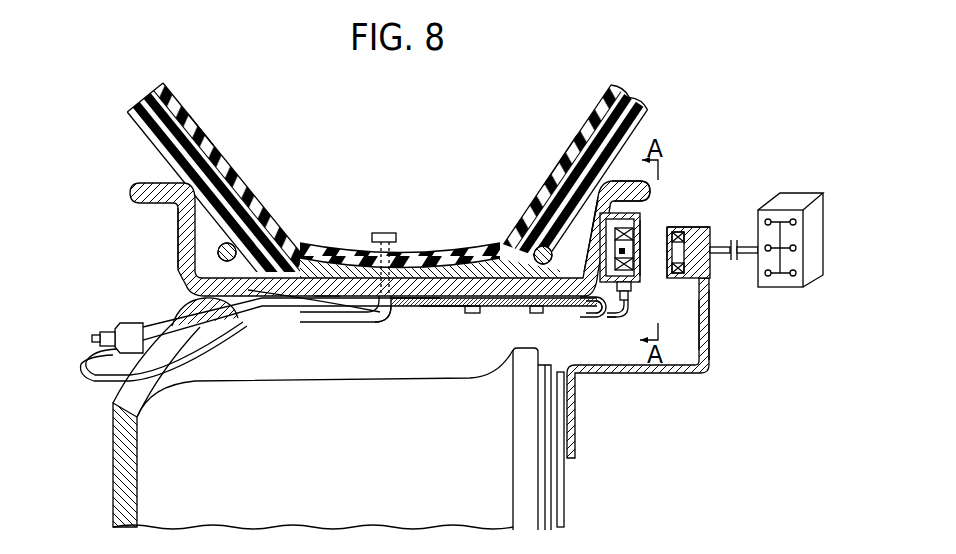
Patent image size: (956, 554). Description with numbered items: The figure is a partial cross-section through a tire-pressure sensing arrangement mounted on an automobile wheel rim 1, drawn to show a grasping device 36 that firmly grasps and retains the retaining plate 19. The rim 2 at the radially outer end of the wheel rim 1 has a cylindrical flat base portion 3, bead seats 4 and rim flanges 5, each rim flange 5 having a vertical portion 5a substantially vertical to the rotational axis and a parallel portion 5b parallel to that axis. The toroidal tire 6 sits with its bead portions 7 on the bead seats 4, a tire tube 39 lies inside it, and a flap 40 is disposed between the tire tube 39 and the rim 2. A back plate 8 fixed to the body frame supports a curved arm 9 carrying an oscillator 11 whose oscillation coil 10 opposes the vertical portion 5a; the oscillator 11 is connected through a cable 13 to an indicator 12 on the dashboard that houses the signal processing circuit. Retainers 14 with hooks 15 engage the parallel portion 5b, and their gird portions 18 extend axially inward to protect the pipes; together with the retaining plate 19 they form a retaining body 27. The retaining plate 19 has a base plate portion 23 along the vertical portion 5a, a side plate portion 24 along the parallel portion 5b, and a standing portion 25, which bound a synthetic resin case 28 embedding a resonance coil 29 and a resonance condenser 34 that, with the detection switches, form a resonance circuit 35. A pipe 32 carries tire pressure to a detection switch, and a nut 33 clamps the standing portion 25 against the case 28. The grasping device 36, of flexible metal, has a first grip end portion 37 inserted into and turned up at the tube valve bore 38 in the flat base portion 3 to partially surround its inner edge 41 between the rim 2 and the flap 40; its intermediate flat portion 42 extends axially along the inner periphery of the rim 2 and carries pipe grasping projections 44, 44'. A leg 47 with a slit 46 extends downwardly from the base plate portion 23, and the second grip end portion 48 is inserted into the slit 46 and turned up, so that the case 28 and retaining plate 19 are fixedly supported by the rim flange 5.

The wheel rim 1 is at (106, 434).
The rim 2 is at (258, 297).
The cylindrical flat base portion 3 is at (293, 298).
The bead seat 4 is at (502, 293).
The rim flange 5 is at (176, 214).
The vertical portion 5a is at (553, 218).
The parallel portion 5b is at (610, 193).
The tire 6 is at (143, 110).
The bead portion 7 is at (232, 202).
The back plate 8 is at (563, 490).
The curved arm 9 is at (652, 372).
The oscillation coil 10 is at (680, 228).
The oscillator 11 is at (715, 223).
The indicator 12 is at (797, 203).
The cable 13 is at (739, 260).
The retainer 14 is at (662, 175).
The hook 15 is at (651, 193).
The gird portion 18 is at (608, 310).
The retaining plate 19 is at (593, 200).
The base plate portion 23 is at (577, 242).
The side plate portion 24 is at (628, 232).
The standing portion 25 is at (628, 294).
The retaining body 27 is at (688, 184).
The case 28 is at (577, 210).
The resonance coil 29 is at (642, 256).
The pipe 32 is at (386, 320).
The nut 33 is at (633, 314).
The resonance condenser 34 is at (697, 350).
The resonance circuit 35 is at (708, 348).
The grasping device 36 is at (432, 314).
The first grip end portion 37 is at (432, 255).
The tube valve bore 38 is at (328, 292).
The tire tube 39 is at (200, 138).
The flap 40 is at (325, 266).
The inner edge 41 is at (393, 306).
The intermediate flat portion 42 is at (475, 312).
The pipe grasping projection 44 is at (493, 329).
The pipe grasping projection 44' is at (421, 323).
The slit 46 is at (537, 313).
The leg 47 is at (593, 315).
The second grip end portion 48 is at (576, 309).